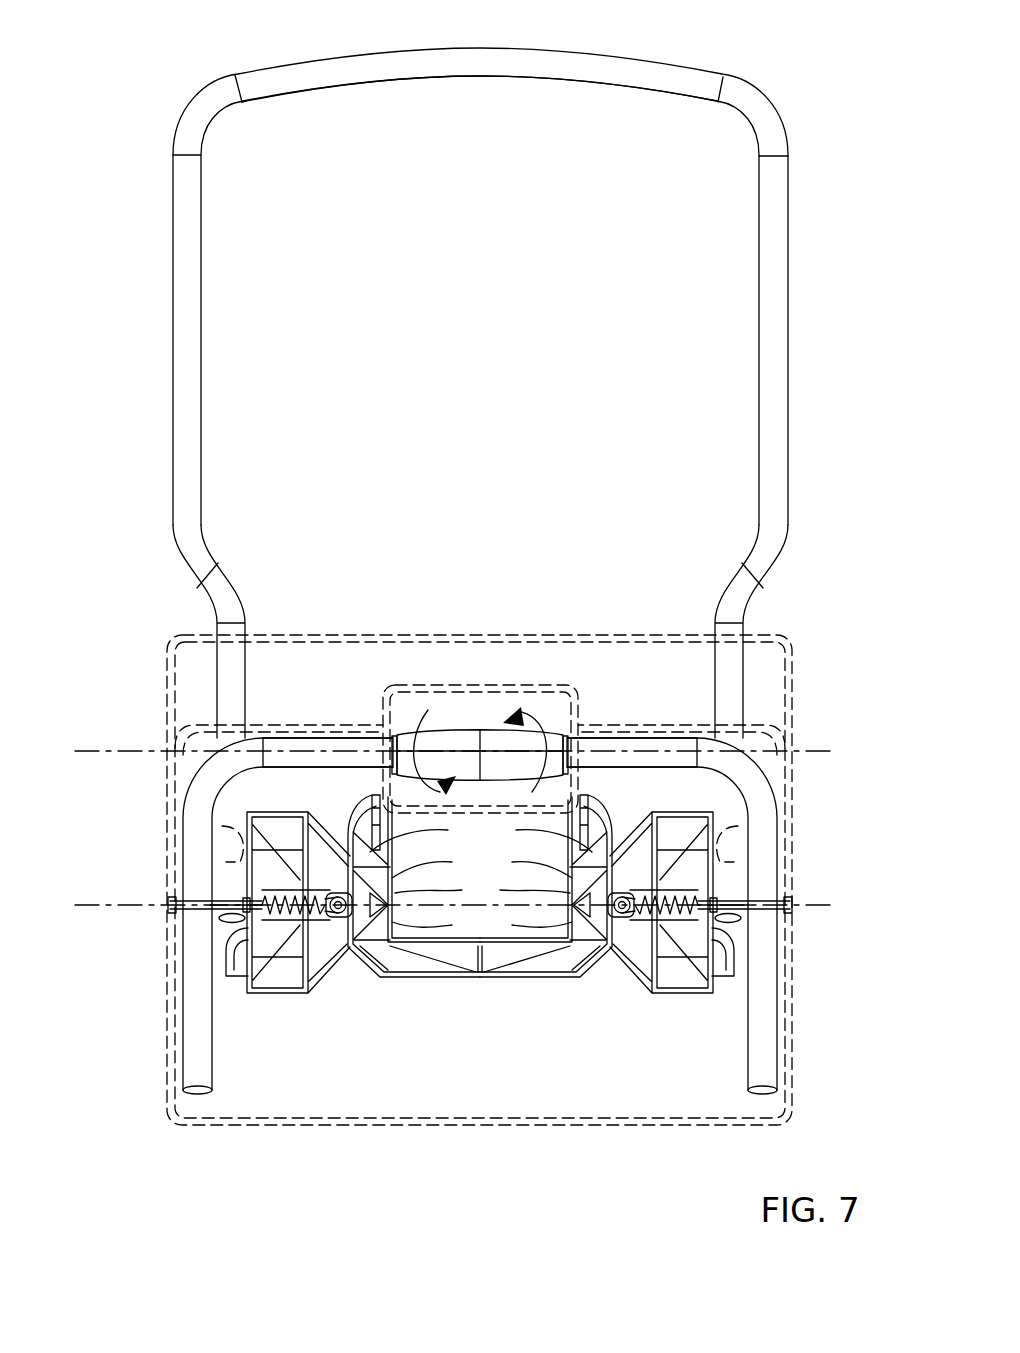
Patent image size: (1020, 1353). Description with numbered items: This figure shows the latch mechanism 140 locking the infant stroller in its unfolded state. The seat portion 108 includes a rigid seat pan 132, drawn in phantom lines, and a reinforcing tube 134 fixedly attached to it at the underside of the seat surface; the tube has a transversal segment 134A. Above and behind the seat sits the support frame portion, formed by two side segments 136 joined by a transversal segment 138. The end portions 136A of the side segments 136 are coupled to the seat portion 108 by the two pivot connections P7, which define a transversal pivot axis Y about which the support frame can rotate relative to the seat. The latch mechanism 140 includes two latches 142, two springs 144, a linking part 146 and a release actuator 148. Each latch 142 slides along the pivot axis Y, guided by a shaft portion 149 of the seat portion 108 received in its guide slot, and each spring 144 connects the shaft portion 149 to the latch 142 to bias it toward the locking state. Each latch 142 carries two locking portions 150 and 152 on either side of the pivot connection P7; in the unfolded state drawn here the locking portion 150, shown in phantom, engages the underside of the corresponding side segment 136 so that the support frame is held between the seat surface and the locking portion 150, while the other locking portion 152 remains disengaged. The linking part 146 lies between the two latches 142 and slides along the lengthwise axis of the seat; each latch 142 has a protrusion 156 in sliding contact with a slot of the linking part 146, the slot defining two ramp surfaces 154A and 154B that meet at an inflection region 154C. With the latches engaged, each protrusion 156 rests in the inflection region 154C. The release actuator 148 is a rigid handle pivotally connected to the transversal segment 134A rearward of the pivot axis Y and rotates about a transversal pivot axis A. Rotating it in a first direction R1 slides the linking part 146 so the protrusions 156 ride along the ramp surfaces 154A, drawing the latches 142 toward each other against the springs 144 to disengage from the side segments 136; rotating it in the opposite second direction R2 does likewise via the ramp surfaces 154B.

The seat portion 108 is at (250, 1134).
The seat pan 132 is at (167, 1082).
The reinforcing tube 134 is at (185, 1032).
The transversal segment 134A is at (328, 745).
The side segments 136 is at (187, 340).
The end portions 136A is at (210, 915).
The transversal segment 138 is at (685, 73).
The latch mechanism 140 is at (452, 1062).
The latches 142 is at (320, 995).
The springs 144 is at (245, 868).
The linking part 146 is at (517, 980).
The release actuator 148 is at (492, 737).
The shaft portion 149 is at (340, 918).
The locking portion 150 is at (222, 826).
The locking portion 152 is at (230, 968).
The ramp surface 154A is at (482, 925).
The ramp surface 154B is at (482, 864).
The inflection region 154C is at (481, 835).
The protrusion 156 is at (482, 890).
The first direction R1 is at (426, 747).
The second direction R2 is at (534, 746).
The pivot axis A is at (147, 751).
The pivot axis Y is at (118, 903).
The pivot connections P7 is at (215, 896).